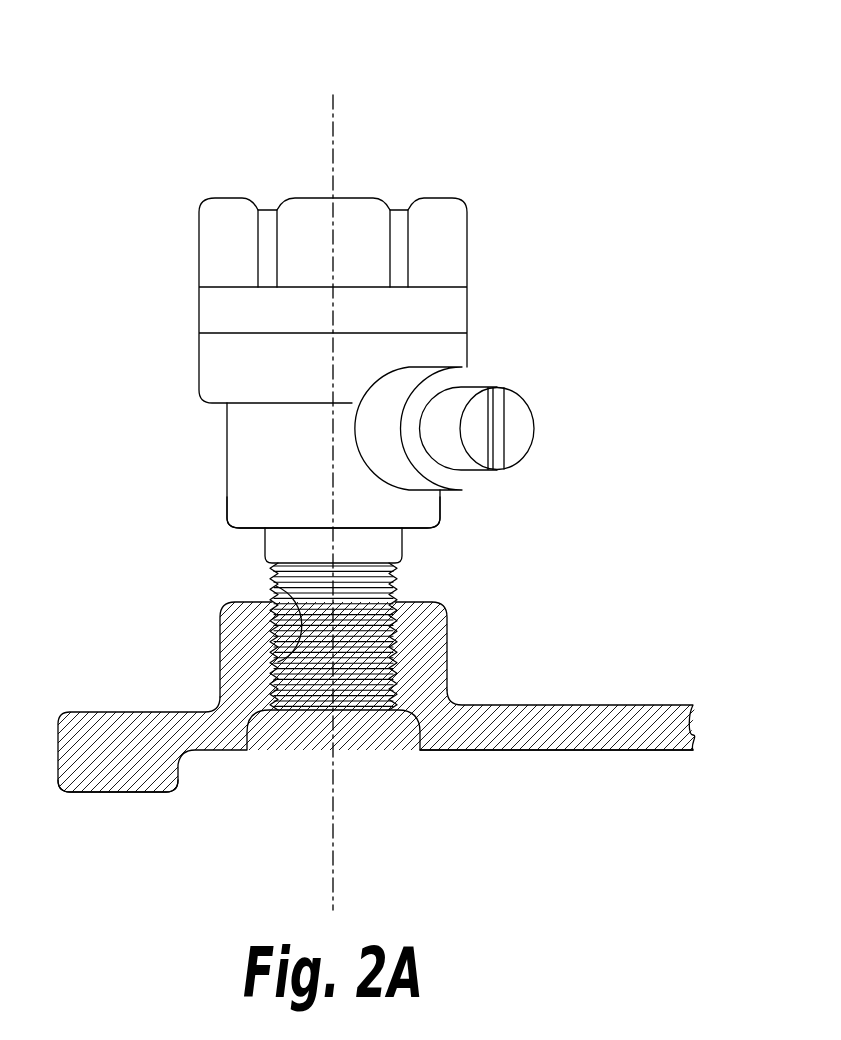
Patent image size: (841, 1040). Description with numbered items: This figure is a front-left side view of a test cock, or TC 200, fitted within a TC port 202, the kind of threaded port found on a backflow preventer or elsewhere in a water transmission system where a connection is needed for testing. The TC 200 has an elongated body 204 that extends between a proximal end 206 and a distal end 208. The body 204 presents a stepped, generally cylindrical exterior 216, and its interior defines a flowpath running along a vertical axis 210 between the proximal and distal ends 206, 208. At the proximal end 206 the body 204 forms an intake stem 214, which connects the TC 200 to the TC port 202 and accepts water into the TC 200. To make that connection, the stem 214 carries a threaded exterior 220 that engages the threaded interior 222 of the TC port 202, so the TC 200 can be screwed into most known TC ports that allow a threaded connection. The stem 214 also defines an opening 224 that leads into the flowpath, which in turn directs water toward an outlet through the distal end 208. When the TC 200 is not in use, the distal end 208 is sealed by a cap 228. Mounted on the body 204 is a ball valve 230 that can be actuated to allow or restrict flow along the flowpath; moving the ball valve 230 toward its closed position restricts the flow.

The TC 200 is at (224, 116).
The TC port 202 is at (107, 718).
The elongated body 204 is at (273, 447).
The proximal end 206 is at (556, 774).
The distal end 208 is at (467, 247).
The vertical axis 210 is at (335, 832).
The intake stem 214 is at (378, 648).
The stepped, generally cylindrical exterior 216 is at (227, 497).
The threaded exterior 220 is at (393, 592).
The threaded interior 222 is at (276, 586).
The opening 224 is at (140, 815).
The cap 228 is at (365, 218).
The ball valve 230 is at (520, 418).